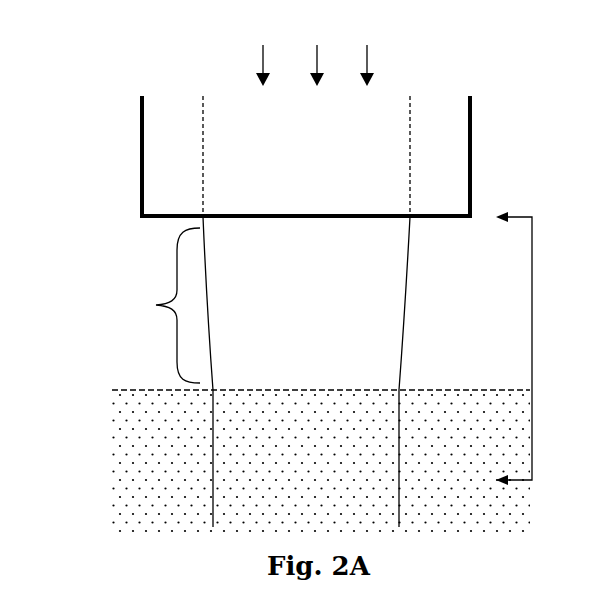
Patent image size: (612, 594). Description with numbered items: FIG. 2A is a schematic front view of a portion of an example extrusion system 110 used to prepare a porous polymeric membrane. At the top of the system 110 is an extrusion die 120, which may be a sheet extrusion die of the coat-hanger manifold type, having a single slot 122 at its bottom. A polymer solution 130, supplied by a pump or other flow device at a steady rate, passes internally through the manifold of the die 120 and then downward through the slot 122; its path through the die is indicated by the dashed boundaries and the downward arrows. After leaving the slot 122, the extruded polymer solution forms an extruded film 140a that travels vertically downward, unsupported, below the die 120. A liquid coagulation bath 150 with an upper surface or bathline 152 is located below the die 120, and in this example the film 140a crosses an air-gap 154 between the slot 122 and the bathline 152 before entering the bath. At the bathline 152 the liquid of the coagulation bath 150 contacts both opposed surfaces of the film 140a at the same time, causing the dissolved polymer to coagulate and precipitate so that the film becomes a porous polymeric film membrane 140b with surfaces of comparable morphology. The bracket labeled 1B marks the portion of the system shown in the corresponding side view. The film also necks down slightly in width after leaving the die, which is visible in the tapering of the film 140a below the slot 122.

The semiconductor processing system 110 is at (99, 279).
The extrusion die 120 is at (447, 157).
The slot 122 is at (426, 235).
The polymer solution 130 is at (385, 98).
The extruded film 140a is at (284, 349).
The porous polymeric film membrane 140b is at (284, 442).
The liquid coagulation bath 150 is at (163, 442).
The bathline 152 is at (120, 389).
The gap between mask and substrate 154 is at (152, 305).
The cross-section view indicator 1B is at (529, 348).